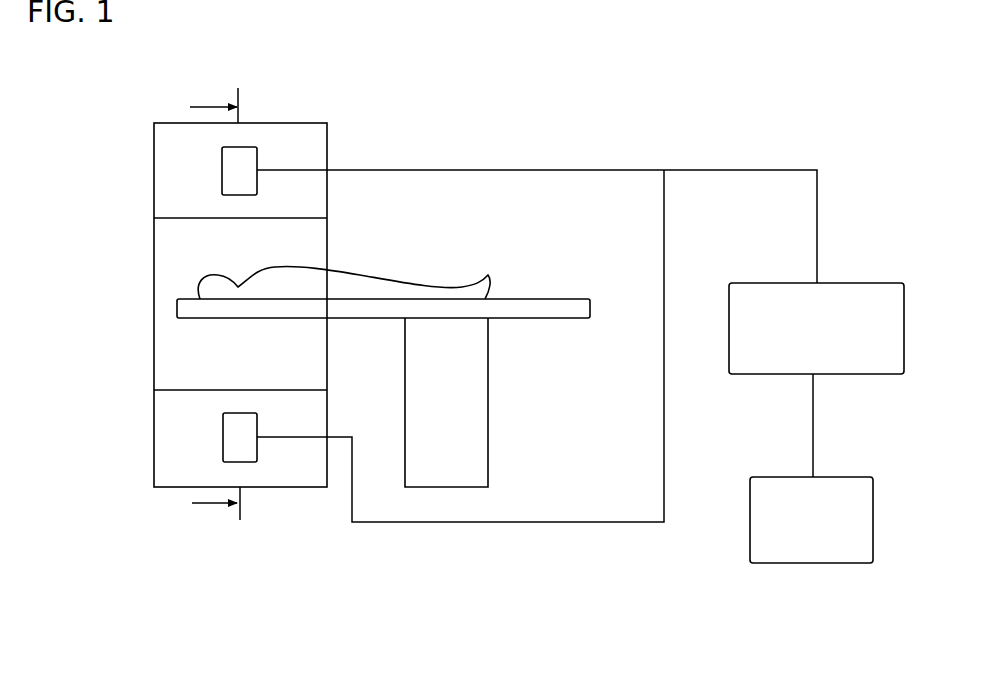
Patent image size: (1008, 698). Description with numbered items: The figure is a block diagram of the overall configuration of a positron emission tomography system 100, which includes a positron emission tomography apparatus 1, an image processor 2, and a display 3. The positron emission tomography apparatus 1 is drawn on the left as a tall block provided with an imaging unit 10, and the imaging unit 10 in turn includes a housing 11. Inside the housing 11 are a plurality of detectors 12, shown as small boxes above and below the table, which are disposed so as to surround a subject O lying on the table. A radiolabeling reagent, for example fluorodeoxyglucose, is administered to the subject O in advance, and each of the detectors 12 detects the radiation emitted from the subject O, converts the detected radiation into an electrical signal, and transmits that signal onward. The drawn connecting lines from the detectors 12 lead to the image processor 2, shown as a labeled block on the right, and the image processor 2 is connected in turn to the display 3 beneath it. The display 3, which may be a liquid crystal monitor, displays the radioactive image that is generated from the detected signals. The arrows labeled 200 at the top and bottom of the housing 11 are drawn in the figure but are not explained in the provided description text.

The positron emission tomography system 100 is at (404, 85).
The positron emission tomography apparatus 1 is at (77, 257).
The imaging unit 10 is at (137, 312).
The housing 11 is at (154, 165).
The detectors 12 is at (222, 183).
The rotation direction arrow 200 is at (194, 304).
The subject O is at (352, 272).
The image processor 2 is at (871, 283).
The display 3 is at (858, 477).